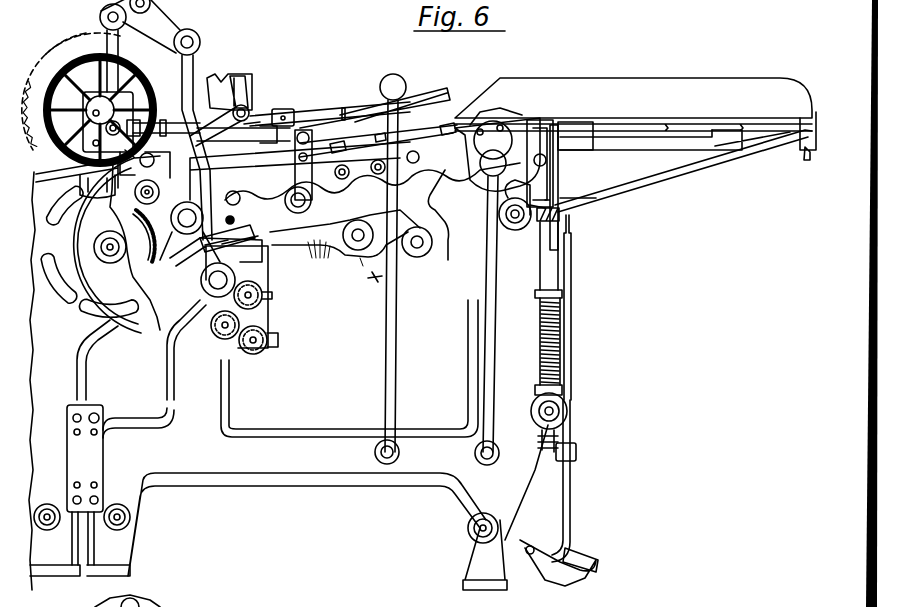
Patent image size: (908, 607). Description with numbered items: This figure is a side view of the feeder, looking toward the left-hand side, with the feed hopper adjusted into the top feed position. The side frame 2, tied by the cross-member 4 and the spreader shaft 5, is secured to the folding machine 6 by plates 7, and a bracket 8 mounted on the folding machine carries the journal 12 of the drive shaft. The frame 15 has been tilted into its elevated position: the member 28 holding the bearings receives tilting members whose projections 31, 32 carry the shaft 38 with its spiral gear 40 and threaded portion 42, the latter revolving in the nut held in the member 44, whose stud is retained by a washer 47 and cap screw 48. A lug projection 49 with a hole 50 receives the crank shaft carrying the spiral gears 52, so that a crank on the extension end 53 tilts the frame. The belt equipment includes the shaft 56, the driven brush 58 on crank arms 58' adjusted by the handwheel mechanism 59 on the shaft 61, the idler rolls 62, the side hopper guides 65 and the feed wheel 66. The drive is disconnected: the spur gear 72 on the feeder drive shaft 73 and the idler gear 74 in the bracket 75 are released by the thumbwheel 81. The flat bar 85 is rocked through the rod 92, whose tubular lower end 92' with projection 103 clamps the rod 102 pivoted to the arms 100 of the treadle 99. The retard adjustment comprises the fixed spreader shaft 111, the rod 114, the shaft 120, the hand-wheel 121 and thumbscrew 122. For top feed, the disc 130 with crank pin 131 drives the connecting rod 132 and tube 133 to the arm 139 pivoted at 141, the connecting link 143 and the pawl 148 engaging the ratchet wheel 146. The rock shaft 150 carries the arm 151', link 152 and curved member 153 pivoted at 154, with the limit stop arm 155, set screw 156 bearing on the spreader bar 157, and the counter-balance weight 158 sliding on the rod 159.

The side frame 2 is at (220, 487).
The cross-member 4 is at (128, 518).
The spreader shaft 5 is at (470, 530).
The folding machine 6 is at (40, 360).
The plate 7 is at (72, 452).
The bracket 8 is at (108, 44).
The journal 12 is at (170, 275).
The frame 15 is at (447, 240).
The member 28 is at (493, 125).
The projection 31 is at (570, 128).
The projection 32 is at (690, 152).
The shaft 38 is at (560, 160).
The spiral gear 40 is at (562, 214).
The threaded portion 42 is at (562, 328).
The member 44 is at (570, 395).
The washer 47 is at (566, 402).
The cap screw 48 is at (560, 411).
The lug projection 49 is at (510, 197).
The hole 50 is at (503, 222).
The spiral gear 52 is at (555, 240).
The extension end 53 is at (515, 220).
The shaft 56 is at (362, 224).
The driven brush 58 is at (319, 260).
The crank arm 58' is at (349, 269).
The handwheel mechanism 59 is at (378, 285).
The shaft 61 is at (418, 228).
The idler roll 62 is at (410, 165).
The side hopper guide 65 is at (447, 86).
The feed wheel 66 is at (40, 70).
The spur gear 72 is at (130, 290).
The feeder drive shaft 73 is at (110, 252).
The idler gear 74 is at (100, 247).
The bracket 75 is at (105, 190).
The thumbwheel 81 is at (48, 168).
The flat bar 85 is at (538, 125).
The rod 92 is at (600, 198).
The tubular lower end 92' is at (588, 307).
The treadle 99 is at (598, 556).
The arm 100 is at (552, 570).
The rod 102 is at (571, 503).
The projection 103 is at (577, 454).
The fixed spreader shaft 111 is at (214, 293).
The rod 114 is at (158, 335).
The shaft 120 is at (272, 293).
The hand-wheel 121 is at (285, 336).
The thumbscrew 122 is at (270, 310).
The disc 130 is at (62, 78).
The crank pin 131 is at (40, 105).
The connecting rod 132 is at (134, 118).
The tube 133 is at (182, 80).
The arm 139 is at (314, 143).
The pivot 141 is at (318, 204).
The connecting link 143 is at (345, 210).
The ratchet wheel 146 is at (262, 258).
The pawl 148 is at (145, 178).
The rock shaft 150 is at (275, 106).
The arm 151' is at (281, 65).
The link 152 is at (178, 125).
The curved member 153 is at (236, 220).
The pivot 154 is at (256, 232).
The arm 155 is at (252, 100).
The set screw 156 is at (248, 70).
The spreader bar 157 is at (218, 70).
The weight 158 is at (294, 110).
The rod 159 is at (370, 100).